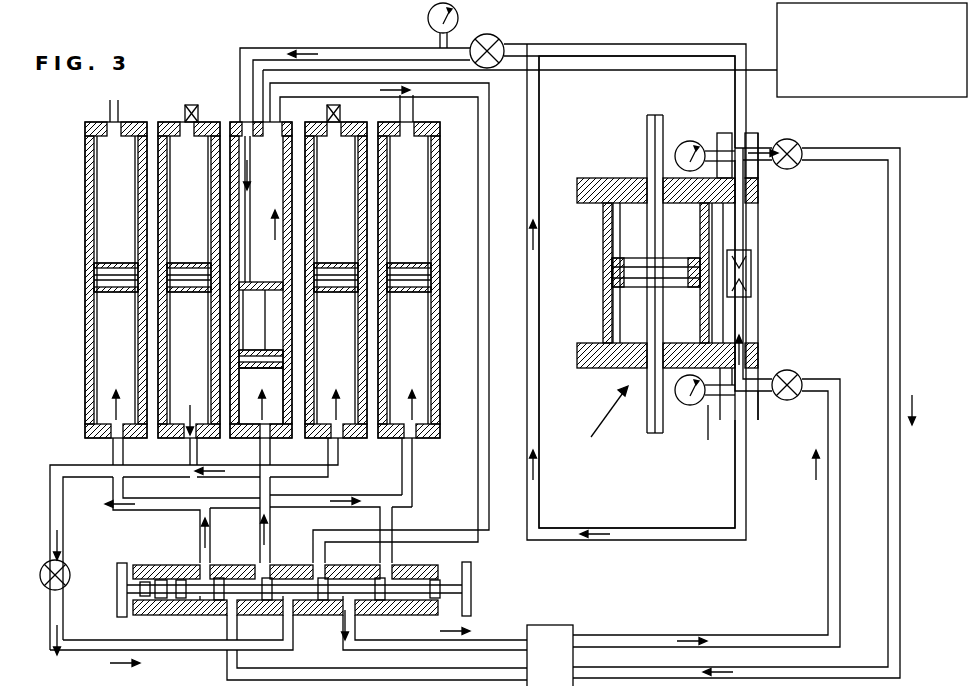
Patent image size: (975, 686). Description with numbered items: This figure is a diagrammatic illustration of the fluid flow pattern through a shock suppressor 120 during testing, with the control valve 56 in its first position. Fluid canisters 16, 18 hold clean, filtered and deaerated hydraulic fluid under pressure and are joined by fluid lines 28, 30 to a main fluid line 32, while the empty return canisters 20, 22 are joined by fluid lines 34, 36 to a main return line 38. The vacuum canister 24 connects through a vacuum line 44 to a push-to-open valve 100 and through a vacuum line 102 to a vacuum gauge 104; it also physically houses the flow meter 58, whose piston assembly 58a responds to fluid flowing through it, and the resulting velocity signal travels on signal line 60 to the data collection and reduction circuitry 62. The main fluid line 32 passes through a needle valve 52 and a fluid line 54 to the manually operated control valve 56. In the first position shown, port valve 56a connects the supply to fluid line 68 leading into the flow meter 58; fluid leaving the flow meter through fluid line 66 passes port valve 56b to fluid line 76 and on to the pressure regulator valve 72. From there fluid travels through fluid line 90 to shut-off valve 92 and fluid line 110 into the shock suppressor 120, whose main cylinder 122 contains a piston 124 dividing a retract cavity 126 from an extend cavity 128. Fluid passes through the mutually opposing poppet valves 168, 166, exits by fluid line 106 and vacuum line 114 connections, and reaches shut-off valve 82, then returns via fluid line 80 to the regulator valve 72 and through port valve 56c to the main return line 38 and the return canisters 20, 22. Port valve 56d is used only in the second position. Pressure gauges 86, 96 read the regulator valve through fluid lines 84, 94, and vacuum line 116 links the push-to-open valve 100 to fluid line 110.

The fluid canister 16 is at (197, 224).
The fluid canister 18 is at (344, 224).
The return canister 20 is at (124, 224).
The return canister 22 is at (417, 224).
The vacuum canister 24 is at (257, 182).
The fluid line 28 is at (199, 456).
The fluid line 30 is at (340, 456).
The main fluid line 32 is at (80, 465).
The fluid line 34 is at (125, 456).
The fluid line 36 is at (414, 456).
The main return line 38 is at (231, 505).
The vacuum line 44 is at (313, 50).
The needle valve 52 is at (64, 565).
The fluid line 54 is at (90, 650).
The control valve 56 is at (122, 563).
The port valve 56a is at (377, 647).
The port valve 56b is at (312, 600).
The port valve 56c is at (202, 598).
The port valve 56d is at (375, 600).
The flow meter 58 is at (276, 396).
The piston assembly 58a is at (273, 357).
The signal line 60 is at (262, 318).
The data collection and reduction circuitry 62 is at (777, 14).
The fluid line 66 is at (452, 88).
The fluid line 68 is at (272, 456).
The pressure regulator valve 72 is at (563, 666).
The fluid line 76 is at (477, 640).
The fluid line 80 is at (916, 463).
The shut-off valve 82 is at (804, 146).
The fluid line 84 is at (712, 150).
The pressure gauge 86 is at (688, 141).
The fluid line 90 is at (835, 388).
The shut-off valve 92 is at (795, 372).
The fluid line 94 is at (703, 433).
The pressure gauge 96 is at (703, 406).
The push-to-open valve 100 is at (505, 44).
The vacuum line 102 is at (437, 40).
The vacuum gauge 104 is at (460, 15).
The fluid line 106 is at (760, 165).
The fluid line 110 is at (762, 400).
The vacuum line 114 is at (583, 44).
The vacuum line 116 is at (533, 283).
The shock suppressor 120 is at (595, 424).
The main cylinder 122 is at (606, 305).
The piston 124 is at (630, 262).
The retract cavity 126 is at (627, 220).
The extend cavity 128 is at (608, 355).
The poppet valve 166 is at (752, 262).
The poppet valve 168 is at (752, 279).